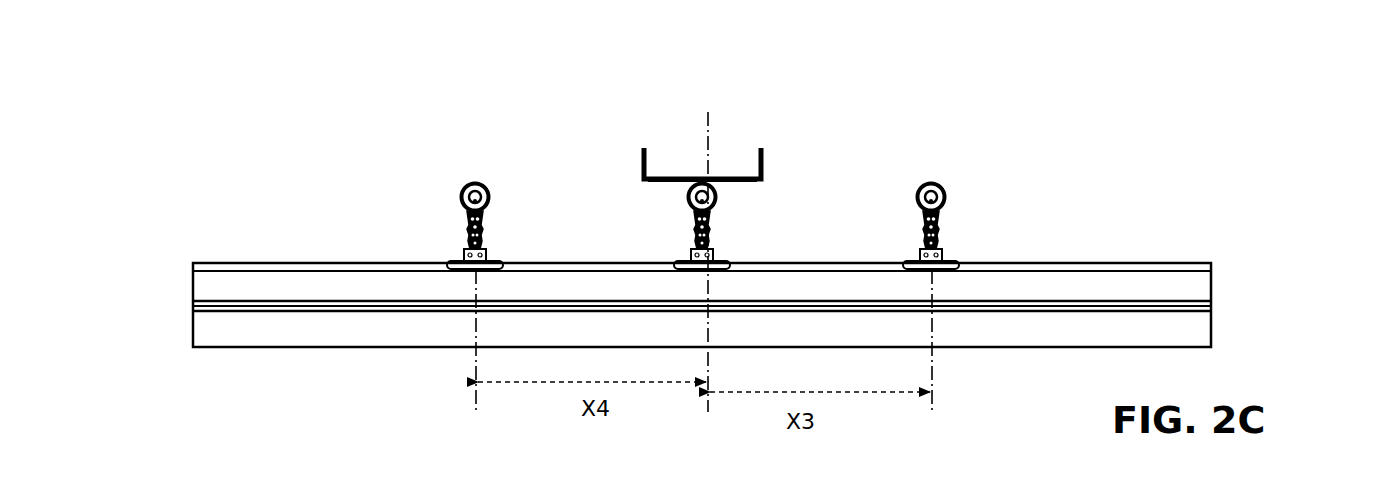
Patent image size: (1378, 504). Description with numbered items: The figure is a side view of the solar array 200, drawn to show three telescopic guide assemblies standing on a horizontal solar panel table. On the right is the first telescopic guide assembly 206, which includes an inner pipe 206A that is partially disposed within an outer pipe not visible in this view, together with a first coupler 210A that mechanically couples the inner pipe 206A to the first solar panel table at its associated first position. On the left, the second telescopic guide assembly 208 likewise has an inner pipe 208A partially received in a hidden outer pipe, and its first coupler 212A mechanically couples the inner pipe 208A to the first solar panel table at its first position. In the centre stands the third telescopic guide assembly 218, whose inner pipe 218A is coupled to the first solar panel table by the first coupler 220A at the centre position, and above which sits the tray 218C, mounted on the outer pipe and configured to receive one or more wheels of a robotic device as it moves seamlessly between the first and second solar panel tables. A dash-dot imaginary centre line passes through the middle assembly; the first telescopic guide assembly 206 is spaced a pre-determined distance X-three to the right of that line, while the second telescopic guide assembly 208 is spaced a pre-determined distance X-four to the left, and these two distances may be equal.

The solar array 200 is at (1230, 70).
The first telescopic guide assembly 206 is at (988, 164).
The inner pipe 206A is at (945, 190).
The second telescopic guide assembly 208 is at (391, 155).
The inner pipe 208A is at (463, 203).
The first coupler 210A is at (952, 234).
The first coupler 212A is at (446, 238).
The third telescopic guide assembly 218 is at (673, 102).
The inner pipe 218A is at (715, 195).
The tray 218C is at (732, 180).
The first coupler 220A is at (684, 237).